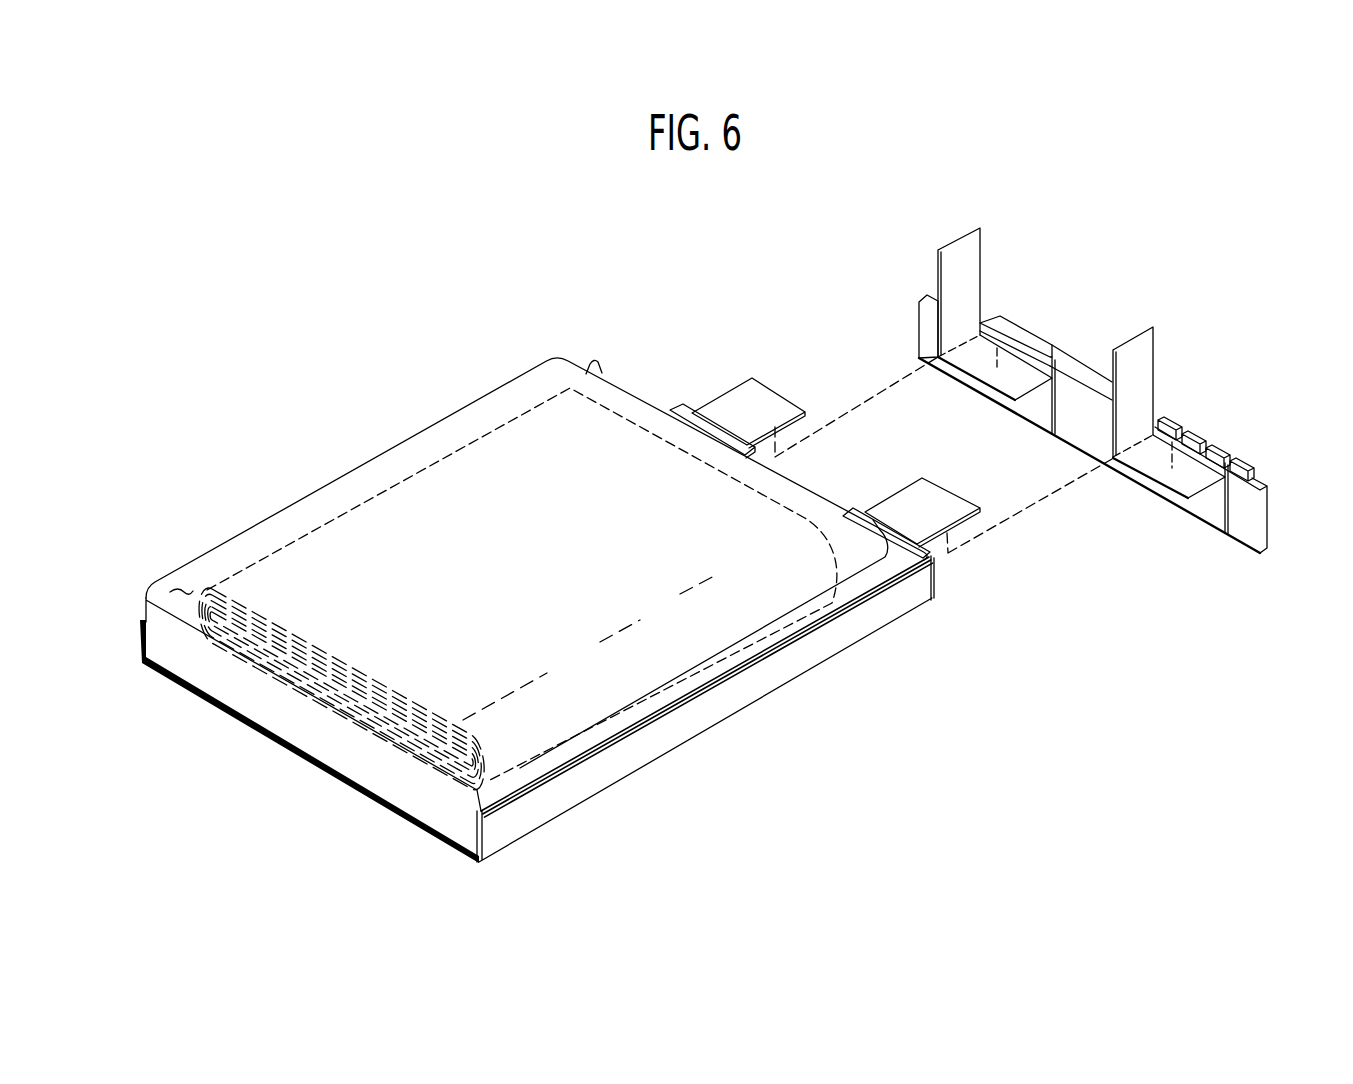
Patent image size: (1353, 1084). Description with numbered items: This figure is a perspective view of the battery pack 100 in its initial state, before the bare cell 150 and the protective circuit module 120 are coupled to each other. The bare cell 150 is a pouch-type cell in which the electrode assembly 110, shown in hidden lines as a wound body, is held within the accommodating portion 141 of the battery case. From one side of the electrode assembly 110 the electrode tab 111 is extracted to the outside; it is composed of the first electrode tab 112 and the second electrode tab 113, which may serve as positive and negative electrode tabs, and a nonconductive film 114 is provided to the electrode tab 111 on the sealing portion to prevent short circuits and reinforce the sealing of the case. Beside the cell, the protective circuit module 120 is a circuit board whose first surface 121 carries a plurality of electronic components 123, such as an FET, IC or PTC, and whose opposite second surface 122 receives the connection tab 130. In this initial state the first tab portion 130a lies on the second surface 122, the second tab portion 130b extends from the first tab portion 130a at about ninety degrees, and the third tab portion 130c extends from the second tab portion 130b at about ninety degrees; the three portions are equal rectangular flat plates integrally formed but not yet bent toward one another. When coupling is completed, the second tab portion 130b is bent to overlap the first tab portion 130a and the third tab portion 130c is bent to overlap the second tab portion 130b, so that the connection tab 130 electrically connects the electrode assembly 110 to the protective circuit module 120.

The battery pack 100 is at (309, 267).
The electrode assembly 110 is at (325, 540).
The electrode tab 111 is at (870, 404).
The first electrode tab 112 is at (925, 488).
The second electrode tab 113 is at (775, 420).
The film 114 is at (927, 559).
The protective circuit module 120 is at (901, 295).
The first surface 121 is at (1015, 330).
The second surface 122 is at (928, 333).
The electronic components 123 is at (1046, 342).
The connection tab 130 is at (961, 218).
The first tab portion 130a is at (1213, 512).
The second tab portion 130b is at (1183, 480).
The third tab portion 130c is at (1116, 430).
The accommodating portion 141 is at (183, 585).
The bare cell 150 is at (572, 836).